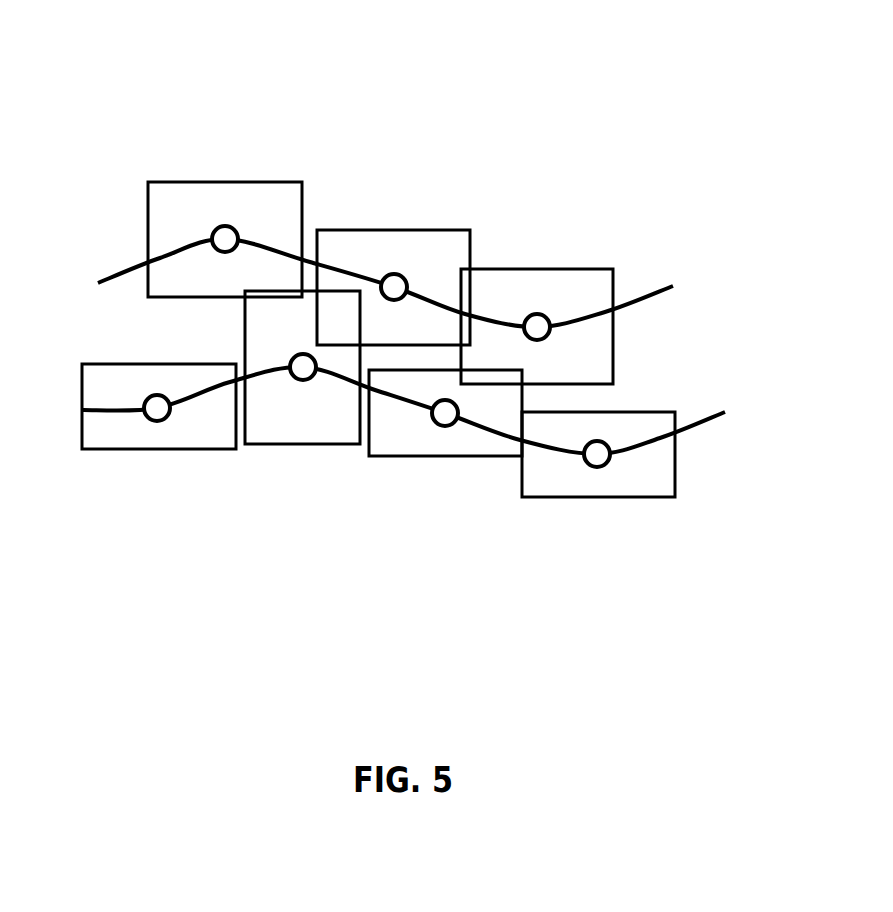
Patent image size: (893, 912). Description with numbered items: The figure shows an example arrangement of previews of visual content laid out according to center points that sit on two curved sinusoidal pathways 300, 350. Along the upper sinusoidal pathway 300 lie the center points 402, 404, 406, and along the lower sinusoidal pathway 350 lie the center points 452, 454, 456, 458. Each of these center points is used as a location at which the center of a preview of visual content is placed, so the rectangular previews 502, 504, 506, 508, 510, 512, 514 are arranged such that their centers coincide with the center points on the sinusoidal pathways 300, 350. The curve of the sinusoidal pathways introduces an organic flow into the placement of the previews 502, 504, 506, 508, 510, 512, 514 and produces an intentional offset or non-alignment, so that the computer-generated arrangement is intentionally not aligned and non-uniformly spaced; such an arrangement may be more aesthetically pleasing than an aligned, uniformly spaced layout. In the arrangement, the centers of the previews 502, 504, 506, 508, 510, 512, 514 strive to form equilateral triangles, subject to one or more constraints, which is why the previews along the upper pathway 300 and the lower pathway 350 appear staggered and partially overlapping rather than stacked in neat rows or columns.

The sinusoidal pathway 300 is at (414, 283).
The sinusoidal pathway 350 is at (430, 410).
The center point 402 is at (237, 225).
The center point 404 is at (402, 274).
The center point 406 is at (543, 313).
The center point 452 is at (152, 422).
The center point 454 is at (297, 382).
The center point 456 is at (440, 428).
The center point 458 is at (592, 469).
The preview of visual content 502 is at (225, 239).
The preview of visual content 504 is at (393, 287).
The preview of visual content 506 is at (537, 326).
The preview of visual content 508 is at (159, 406).
The preview of visual content 510 is at (302, 367).
The preview of visual content 512 is at (445, 413).
The preview of visual content 514 is at (598, 454).